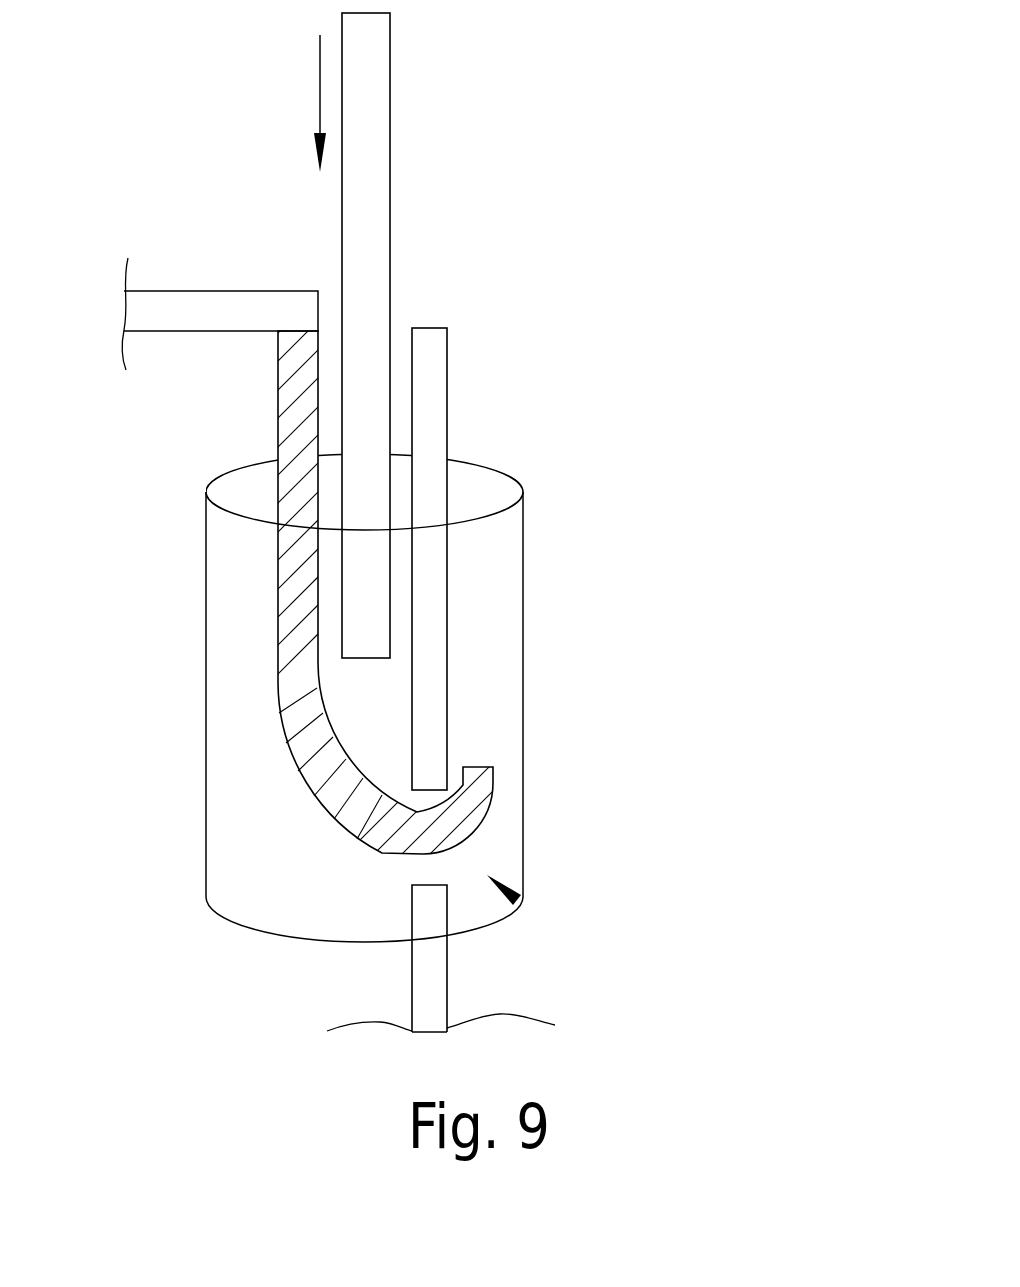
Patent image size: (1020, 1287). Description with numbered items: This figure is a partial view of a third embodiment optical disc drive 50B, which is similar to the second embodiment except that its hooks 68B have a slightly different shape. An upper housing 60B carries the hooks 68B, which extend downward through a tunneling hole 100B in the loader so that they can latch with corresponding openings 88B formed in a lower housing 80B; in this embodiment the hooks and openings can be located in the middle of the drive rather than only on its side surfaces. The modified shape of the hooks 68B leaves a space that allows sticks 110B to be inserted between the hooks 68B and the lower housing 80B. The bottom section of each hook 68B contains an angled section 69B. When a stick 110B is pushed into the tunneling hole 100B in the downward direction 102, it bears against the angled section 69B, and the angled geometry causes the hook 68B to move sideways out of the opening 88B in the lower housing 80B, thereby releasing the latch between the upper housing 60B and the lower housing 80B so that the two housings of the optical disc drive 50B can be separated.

The third embodiment optical disc drive 50B is at (745, 600).
The upper housing 60B is at (181, 311).
The hooks 68B is at (279, 409).
The angled section 69B is at (290, 758).
The lower housing 80B is at (430, 398).
The openings 88B is at (517, 900).
The tunneling holes 100B is at (250, 853).
The downward direction 102 is at (320, 88).
The sticks 110B is at (375, 72).